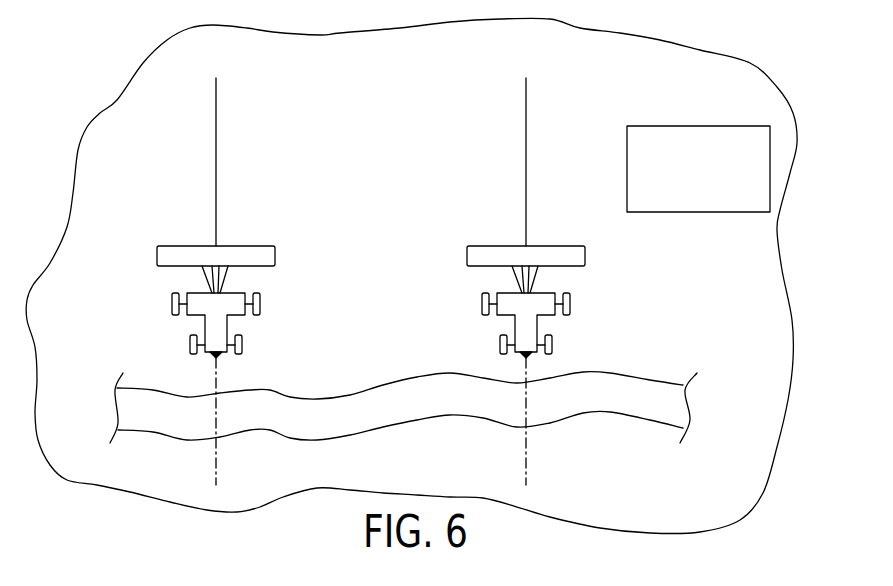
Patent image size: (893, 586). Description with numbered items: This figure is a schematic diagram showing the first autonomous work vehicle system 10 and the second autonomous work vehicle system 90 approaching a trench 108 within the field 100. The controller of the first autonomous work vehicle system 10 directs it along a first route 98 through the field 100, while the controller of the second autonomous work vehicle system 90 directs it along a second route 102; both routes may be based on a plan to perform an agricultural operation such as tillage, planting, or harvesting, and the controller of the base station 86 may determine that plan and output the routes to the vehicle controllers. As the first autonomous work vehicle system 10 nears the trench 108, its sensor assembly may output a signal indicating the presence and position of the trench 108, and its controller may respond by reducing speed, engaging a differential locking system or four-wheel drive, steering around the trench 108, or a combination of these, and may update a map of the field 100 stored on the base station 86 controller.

The first autonomous work vehicle system 10 is at (150, 272).
The second autonomous work vehicle system 90 is at (452, 270).
The first route 98 is at (217, 162).
The second route 102 is at (526, 162).
The base station 86 is at (700, 126).
The field 100 is at (600, 67).
The trench 108 is at (400, 383).